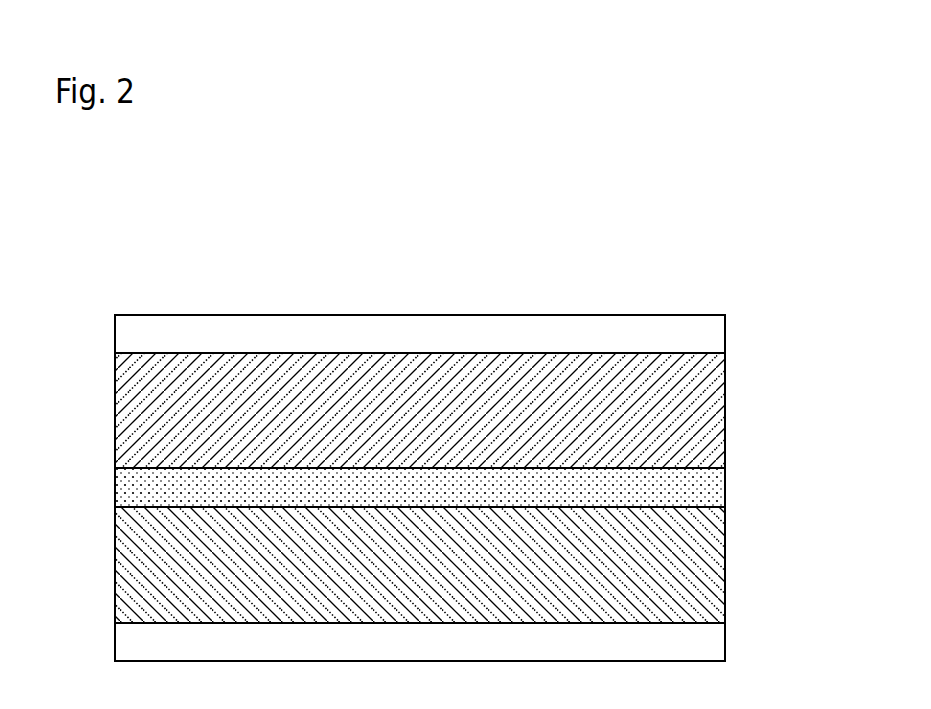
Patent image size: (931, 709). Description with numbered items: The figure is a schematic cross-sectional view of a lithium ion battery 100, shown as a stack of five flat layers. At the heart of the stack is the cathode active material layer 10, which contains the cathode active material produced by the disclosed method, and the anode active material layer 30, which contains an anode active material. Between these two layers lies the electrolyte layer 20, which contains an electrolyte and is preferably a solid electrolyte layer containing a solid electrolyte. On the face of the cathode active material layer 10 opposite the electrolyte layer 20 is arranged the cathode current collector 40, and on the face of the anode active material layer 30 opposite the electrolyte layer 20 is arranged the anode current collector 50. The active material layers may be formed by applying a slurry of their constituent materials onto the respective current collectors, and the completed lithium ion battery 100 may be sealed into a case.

The lithium ion battery 100 is at (430, 232).
The cathode current collector 40 is at (725, 334).
The cathode active material layer 10 is at (725, 418).
The electrolyte layer 20 is at (725, 488).
The anode active material layer 30 is at (725, 570).
The anode current collector 50 is at (725, 642).